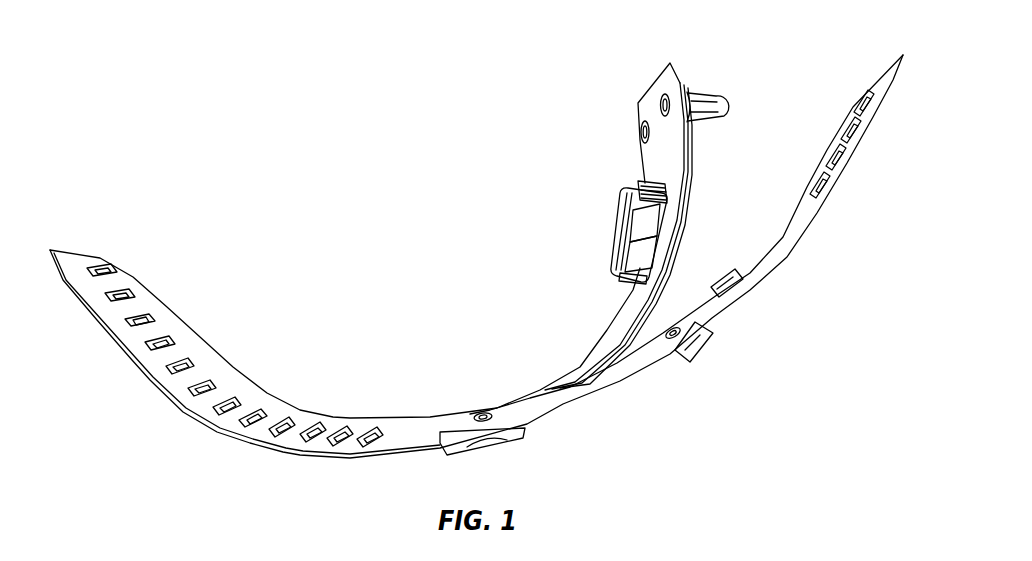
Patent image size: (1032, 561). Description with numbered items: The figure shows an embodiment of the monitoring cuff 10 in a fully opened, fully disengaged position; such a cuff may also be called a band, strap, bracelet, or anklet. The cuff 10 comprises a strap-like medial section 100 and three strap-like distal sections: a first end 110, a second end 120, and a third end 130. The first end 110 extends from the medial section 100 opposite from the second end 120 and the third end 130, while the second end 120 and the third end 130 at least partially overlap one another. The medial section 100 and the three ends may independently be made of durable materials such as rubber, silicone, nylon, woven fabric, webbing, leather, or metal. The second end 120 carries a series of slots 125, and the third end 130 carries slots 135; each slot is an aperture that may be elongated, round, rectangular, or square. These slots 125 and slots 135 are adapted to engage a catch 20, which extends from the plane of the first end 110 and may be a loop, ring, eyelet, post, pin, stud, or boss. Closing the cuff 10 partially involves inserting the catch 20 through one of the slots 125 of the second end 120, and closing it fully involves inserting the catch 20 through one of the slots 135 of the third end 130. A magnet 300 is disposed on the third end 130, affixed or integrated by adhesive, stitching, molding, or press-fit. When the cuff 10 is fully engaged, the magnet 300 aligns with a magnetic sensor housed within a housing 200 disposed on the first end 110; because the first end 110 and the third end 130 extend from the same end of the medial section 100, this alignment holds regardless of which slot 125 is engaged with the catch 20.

The monitoring cuff 10 is at (383, 178).
The catch 20 is at (712, 93).
The medial section 100 is at (450, 425).
The first end 110 is at (652, 93).
The second end 120 is at (163, 320).
The slots 125 is at (117, 293).
The third end 130 is at (783, 237).
The slots 135 is at (858, 97).
The housing 200 is at (615, 227).
The magnet 300 is at (735, 280).